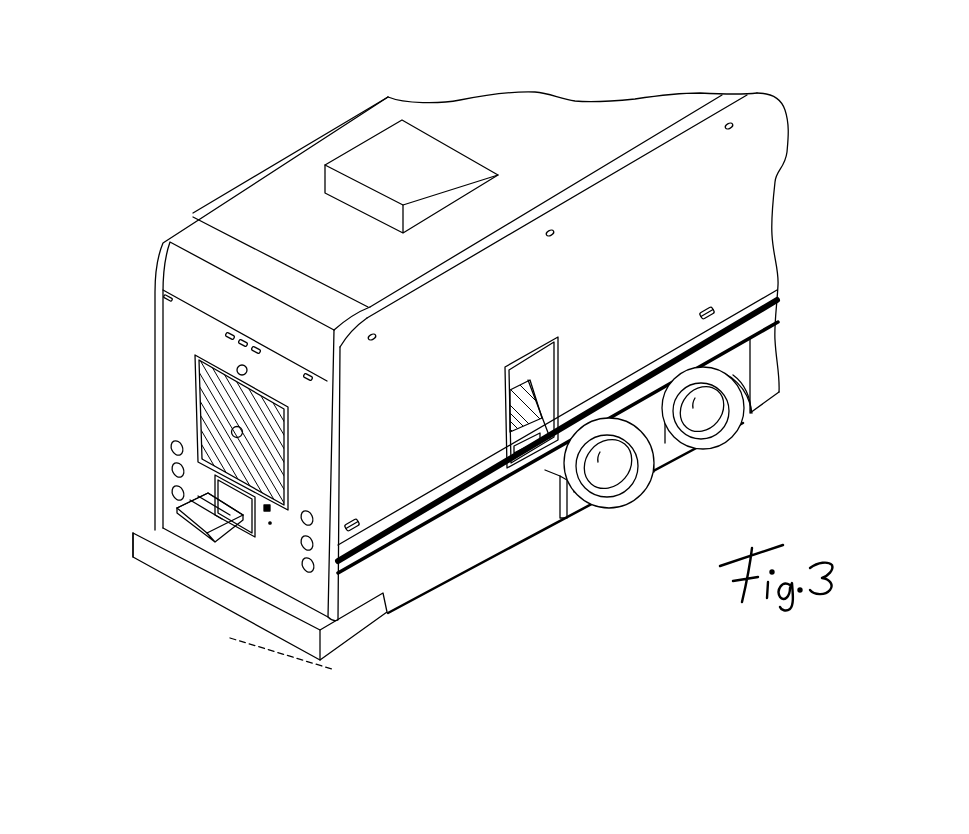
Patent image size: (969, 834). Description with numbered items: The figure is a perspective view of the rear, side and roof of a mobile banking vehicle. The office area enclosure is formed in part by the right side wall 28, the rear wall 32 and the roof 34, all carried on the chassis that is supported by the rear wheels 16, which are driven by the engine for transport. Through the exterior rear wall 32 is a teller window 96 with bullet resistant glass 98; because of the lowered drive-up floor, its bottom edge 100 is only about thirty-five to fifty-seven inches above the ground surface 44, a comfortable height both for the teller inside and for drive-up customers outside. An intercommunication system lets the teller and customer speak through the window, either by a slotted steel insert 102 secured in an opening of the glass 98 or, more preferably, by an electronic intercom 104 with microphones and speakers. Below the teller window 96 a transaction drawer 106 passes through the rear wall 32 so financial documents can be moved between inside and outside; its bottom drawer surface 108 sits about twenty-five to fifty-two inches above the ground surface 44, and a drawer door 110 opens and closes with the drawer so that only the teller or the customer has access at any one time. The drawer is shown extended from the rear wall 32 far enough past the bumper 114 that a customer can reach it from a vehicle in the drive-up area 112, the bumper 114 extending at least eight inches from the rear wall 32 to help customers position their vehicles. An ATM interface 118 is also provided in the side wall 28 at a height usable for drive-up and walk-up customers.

The rear wheels 16 is at (692, 445).
The right side wall 28 is at (690, 205).
The rear wall 32 is at (178, 391).
The roof 34 is at (496, 133).
The ground surface 44 is at (347, 730).
The teller window 96 is at (205, 360).
The bullet resistant glass 98 is at (222, 403).
The bottom edge 100 is at (268, 497).
The steel insert 102 is at (232, 431).
The electronic intercom 104 is at (270, 513).
The transaction drawer 106 is at (236, 532).
The bottom drawer surface 108 is at (207, 517).
The drawer door 110 is at (212, 530).
The drive-up area 112 is at (102, 641).
The bumper 114 is at (300, 623).
The ATM interface 118 is at (547, 460).